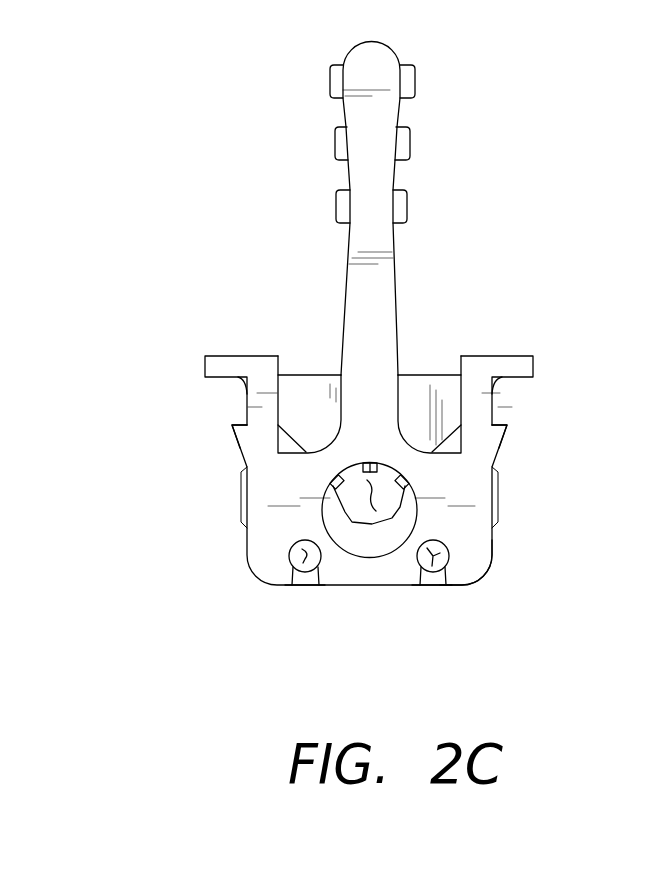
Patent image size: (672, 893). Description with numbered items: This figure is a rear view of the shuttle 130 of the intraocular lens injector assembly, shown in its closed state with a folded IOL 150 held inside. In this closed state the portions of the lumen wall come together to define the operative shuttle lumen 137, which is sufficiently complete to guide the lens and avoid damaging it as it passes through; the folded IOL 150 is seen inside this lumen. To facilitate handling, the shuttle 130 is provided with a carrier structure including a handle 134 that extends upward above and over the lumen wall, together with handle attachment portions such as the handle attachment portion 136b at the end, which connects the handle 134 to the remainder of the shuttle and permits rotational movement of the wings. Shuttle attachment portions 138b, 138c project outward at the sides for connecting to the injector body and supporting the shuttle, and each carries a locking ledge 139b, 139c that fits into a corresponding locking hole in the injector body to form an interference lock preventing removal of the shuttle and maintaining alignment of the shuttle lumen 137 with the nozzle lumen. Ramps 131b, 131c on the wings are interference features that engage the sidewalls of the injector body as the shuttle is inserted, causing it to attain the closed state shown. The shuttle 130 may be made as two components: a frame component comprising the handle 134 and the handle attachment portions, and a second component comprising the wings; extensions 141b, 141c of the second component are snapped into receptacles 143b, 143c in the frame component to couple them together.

The shuttle 130 is at (290, 123).
The handle 134 is at (399, 117).
The ramp 131b is at (307, 373).
The ramp 131c is at (415, 375).
The shuttle attachment portion 138b is at (203, 362).
The shuttle attachment portion 138c is at (535, 364).
The locking ledge 139b is at (235, 438).
The locking ledge 139c is at (503, 423).
The shuttle lumen 137 is at (372, 490).
The extension 141b is at (290, 548).
The extension 141c is at (433, 556).
The receptacle 143b is at (293, 587).
The receptacle 143c is at (438, 587).
The handle attachment portion 136b is at (483, 580).
The folded IOL 150 is at (372, 524).